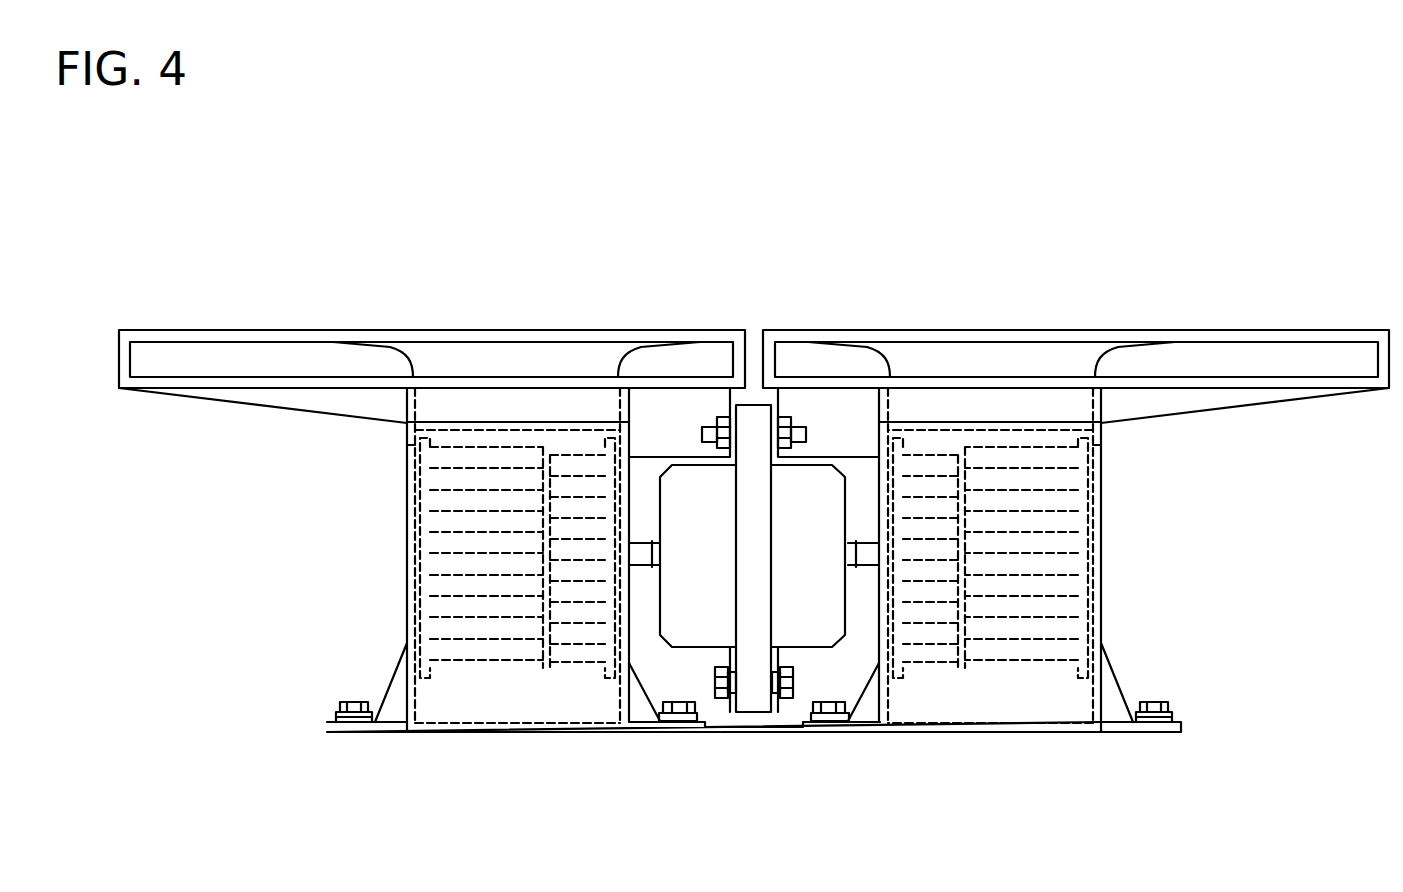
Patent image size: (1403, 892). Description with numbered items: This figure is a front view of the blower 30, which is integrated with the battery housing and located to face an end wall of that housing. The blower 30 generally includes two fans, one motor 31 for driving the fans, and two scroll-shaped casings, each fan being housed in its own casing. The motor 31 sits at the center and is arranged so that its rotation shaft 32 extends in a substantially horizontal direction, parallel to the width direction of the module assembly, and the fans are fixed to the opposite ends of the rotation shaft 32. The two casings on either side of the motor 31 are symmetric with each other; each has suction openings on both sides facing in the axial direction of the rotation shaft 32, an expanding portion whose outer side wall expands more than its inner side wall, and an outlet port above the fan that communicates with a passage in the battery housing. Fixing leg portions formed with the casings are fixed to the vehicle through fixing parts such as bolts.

The blower 30 is at (1110, 540).
The motor 31 is at (806, 640).
The rotation shaft 32 is at (861, 556).